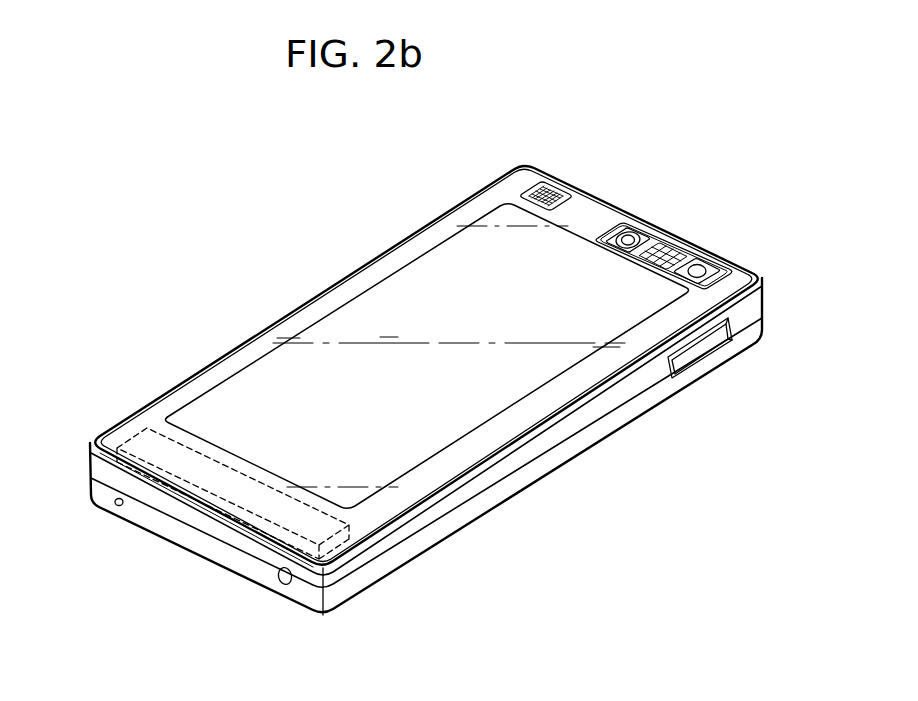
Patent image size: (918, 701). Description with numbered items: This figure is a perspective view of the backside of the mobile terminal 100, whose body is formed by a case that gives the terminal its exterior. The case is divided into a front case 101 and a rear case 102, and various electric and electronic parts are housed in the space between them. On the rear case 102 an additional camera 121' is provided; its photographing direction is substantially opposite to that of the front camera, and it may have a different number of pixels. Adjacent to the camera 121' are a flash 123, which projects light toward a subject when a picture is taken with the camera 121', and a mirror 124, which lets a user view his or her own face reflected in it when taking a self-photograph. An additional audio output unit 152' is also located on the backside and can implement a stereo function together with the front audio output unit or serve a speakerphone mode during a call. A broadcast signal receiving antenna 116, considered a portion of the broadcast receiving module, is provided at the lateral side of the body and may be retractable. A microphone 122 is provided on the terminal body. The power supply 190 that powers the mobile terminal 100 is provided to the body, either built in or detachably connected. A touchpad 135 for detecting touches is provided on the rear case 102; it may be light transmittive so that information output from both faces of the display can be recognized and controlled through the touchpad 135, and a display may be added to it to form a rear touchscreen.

The mobile terminal 100 is at (386, 200).
The front case 101 is at (764, 318).
The rear case 102 is at (762, 296).
The broadcast signal receiving antenna 116 is at (287, 584).
The camera 121' is at (639, 197).
The microphone 122 is at (116, 504).
The flash 123 is at (667, 250).
The mirror 124 is at (700, 266).
The touchpad 135 is at (343, 314).
The additional audio output unit 152' is at (544, 159).
The power supply 190 is at (132, 438).